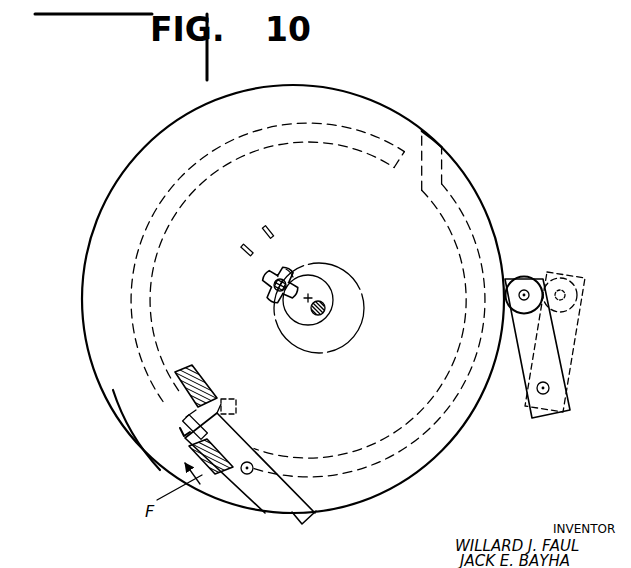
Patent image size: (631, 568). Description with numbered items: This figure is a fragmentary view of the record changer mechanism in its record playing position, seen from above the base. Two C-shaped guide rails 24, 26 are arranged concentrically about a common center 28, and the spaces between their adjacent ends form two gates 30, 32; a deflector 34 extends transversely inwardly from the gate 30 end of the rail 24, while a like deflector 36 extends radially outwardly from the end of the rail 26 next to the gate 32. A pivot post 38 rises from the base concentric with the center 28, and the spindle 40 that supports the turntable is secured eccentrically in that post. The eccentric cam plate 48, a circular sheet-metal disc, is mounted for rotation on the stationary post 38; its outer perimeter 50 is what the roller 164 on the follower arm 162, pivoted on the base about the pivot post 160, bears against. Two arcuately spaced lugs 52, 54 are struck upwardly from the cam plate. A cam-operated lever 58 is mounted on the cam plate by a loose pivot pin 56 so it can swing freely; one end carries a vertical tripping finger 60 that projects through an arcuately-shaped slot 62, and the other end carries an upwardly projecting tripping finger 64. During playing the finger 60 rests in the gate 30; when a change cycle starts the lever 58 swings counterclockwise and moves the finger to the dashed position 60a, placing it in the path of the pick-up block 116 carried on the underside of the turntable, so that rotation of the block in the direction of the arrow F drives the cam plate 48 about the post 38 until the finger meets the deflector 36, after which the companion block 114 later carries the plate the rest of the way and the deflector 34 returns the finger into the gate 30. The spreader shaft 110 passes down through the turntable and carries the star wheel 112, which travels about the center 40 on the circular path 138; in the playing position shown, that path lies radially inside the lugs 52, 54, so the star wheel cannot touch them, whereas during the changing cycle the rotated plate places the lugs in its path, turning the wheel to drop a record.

The guide rail 24 is at (210, 177).
The guide rail 26 is at (436, 388).
The common center 28 is at (310, 297).
The gate 30 is at (219, 417).
The gate 32 is at (410, 167).
The deflector 34 is at (227, 398).
The deflector 36 is at (445, 154).
The pivot post 38 is at (332, 290).
The spindle 40 is at (318, 315).
The cam plate 48 is at (106, 403).
The disc 50 is at (82, 303).
The lug 52 is at (245, 252).
The lug 54 is at (272, 230).
The pivot pin 56 is at (252, 475).
The cam-operated lever 58 is at (247, 438).
The tripping finger 60 is at (186, 417).
The tripping finger dashed line position 60a is at (185, 445).
The arcuately-shaped slot 62 is at (183, 428).
The tripping finger 64 is at (302, 525).
The spreader shaft 110 is at (268, 287).
The star wheel 112 is at (285, 266).
The pick-up block 114 is at (199, 367).
The pick-up block 116 is at (218, 478).
The circular path 138 is at (362, 328).
The pivot post 160 is at (550, 386).
The follower arm 162 is at (517, 358).
The roller 164 is at (525, 277).